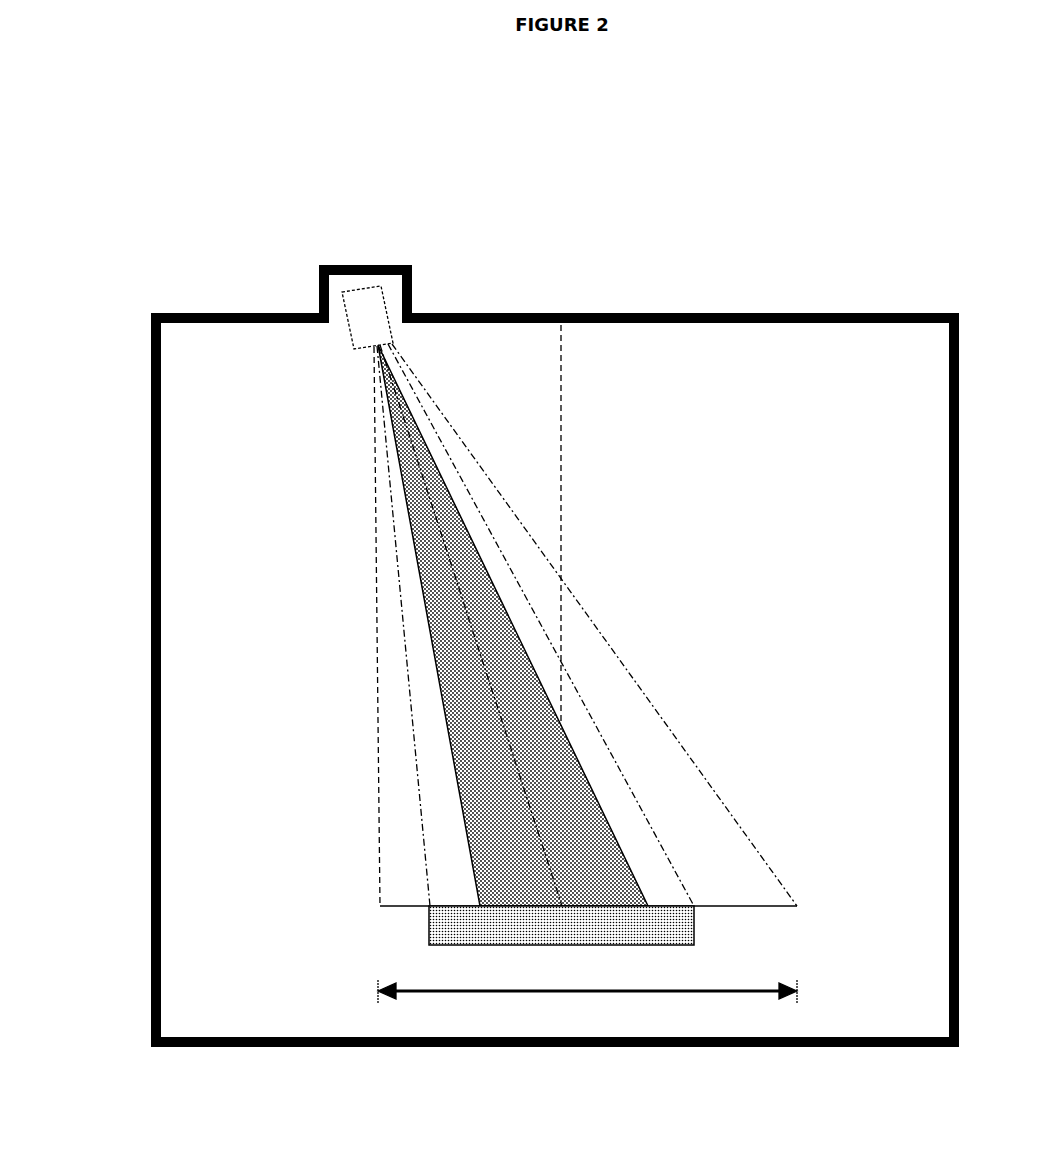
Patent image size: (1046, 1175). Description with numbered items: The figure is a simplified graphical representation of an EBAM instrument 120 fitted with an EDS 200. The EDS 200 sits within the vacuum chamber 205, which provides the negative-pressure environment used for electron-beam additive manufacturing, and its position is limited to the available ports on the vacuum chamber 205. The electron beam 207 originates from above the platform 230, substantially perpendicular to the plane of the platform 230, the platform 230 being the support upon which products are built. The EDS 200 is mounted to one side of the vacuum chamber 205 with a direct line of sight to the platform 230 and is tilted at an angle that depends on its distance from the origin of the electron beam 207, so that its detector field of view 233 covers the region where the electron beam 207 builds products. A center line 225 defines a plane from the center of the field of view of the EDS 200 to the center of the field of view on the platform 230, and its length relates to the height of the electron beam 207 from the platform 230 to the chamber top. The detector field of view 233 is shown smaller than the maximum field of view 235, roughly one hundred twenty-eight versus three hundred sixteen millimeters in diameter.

The EBAM instrument 120 is at (800, 272).
The vacuum chamber 205 is at (204, 377).
The EDS 200 is at (374, 350).
The electron beam 207 is at (558, 463).
The center line 225 is at (412, 540).
The detector field of view 233 is at (478, 872).
The platform 230 is at (698, 932).
The maximum field of view 235 is at (485, 993).